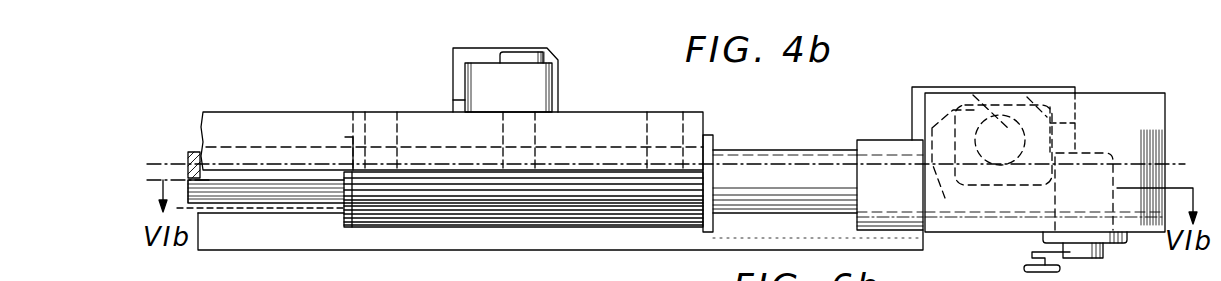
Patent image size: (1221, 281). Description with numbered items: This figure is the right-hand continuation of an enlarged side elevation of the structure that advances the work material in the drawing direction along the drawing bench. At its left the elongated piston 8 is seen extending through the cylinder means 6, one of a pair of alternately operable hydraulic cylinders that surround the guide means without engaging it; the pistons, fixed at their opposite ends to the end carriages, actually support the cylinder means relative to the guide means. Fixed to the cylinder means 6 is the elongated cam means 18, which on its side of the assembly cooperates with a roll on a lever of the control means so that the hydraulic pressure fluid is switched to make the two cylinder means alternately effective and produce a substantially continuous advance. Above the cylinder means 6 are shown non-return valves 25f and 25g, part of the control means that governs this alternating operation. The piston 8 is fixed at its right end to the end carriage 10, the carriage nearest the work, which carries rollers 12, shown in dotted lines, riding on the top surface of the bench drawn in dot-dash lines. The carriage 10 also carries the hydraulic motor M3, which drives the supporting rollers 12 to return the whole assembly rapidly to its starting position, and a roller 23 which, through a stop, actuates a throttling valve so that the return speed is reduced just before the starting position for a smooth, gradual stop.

The cam means 18 is at (282, 120).
The non-return valve 25g is at (460, 54).
The non-return valve 25f is at (472, 90).
The piston 8 is at (278, 193).
The cylinder means 6 is at (505, 202).
The rollers 12 is at (982, 125).
The end carriage 10 is at (1097, 93).
The hydraulic motor M3 is at (1077, 125).
The roller 23 is at (1030, 267).